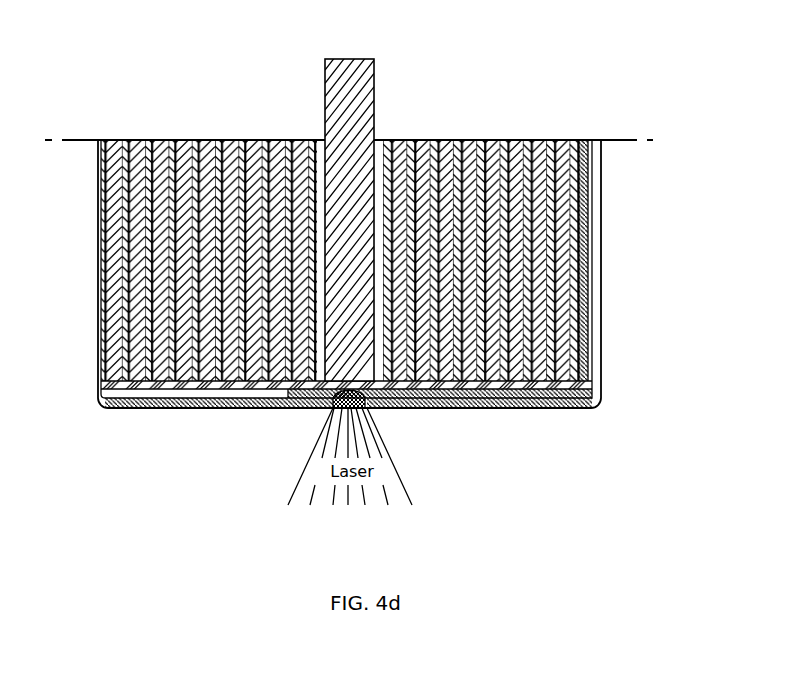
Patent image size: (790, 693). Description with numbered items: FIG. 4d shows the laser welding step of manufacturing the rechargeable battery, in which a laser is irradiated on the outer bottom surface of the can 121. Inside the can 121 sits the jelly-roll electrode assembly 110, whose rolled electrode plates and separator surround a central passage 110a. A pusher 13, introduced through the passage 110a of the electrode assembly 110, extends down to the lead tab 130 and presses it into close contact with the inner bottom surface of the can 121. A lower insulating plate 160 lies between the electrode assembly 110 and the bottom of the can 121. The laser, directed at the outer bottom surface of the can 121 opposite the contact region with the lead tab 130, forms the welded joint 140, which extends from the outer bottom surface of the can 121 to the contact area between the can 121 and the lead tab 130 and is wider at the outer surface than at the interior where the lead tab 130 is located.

The pusher 13 is at (368, 78).
The electrode assembly 110 is at (600, 255).
The passage 110a is at (382, 313).
The can 121 is at (602, 195).
The lead tab 130 is at (468, 402).
The welded joint 140 is at (380, 407).
The lower insulating plate 160 is at (595, 388).